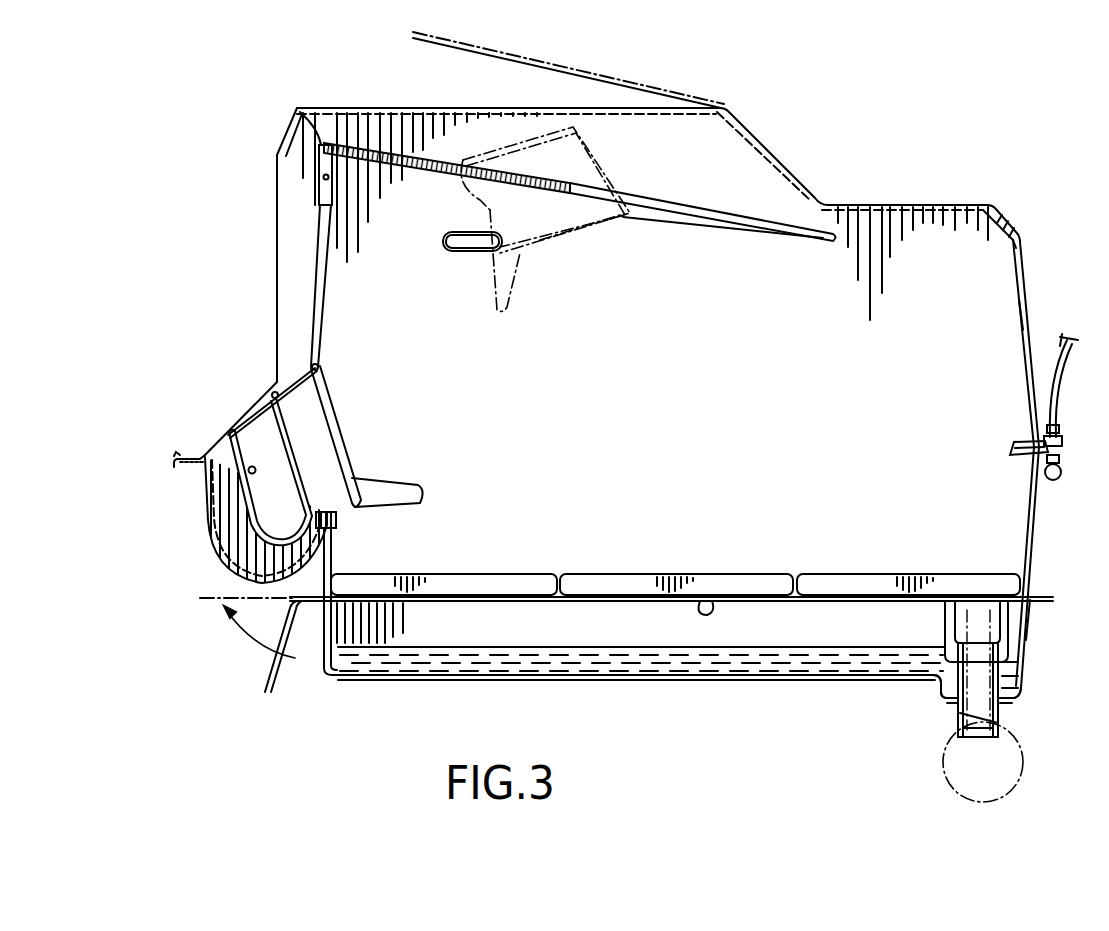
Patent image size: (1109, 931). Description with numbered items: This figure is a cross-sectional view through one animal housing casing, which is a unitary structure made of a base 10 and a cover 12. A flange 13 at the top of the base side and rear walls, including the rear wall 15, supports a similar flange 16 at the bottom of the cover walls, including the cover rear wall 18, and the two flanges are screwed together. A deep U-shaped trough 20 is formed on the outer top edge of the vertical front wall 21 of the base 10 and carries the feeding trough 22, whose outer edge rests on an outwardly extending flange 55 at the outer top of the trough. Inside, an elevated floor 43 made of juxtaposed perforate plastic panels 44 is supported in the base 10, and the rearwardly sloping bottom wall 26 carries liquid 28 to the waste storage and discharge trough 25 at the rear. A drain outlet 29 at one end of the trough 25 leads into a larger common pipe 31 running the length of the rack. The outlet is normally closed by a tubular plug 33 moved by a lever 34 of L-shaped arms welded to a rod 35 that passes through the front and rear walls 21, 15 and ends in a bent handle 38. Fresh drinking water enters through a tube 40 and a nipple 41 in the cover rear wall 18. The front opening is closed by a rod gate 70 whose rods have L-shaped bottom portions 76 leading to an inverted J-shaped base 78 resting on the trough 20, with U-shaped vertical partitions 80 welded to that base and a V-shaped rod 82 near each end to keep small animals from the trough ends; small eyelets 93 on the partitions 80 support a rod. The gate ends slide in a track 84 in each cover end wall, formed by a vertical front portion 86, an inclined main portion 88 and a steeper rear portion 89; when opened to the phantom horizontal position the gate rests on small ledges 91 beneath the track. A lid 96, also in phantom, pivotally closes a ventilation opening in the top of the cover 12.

The base 10 is at (1037, 557).
The cover 12 is at (1013, 243).
The flange 13 is at (1057, 476).
The rear wall 15 is at (1028, 627).
The flange 16 is at (1060, 458).
The rear wall 18 is at (1020, 324).
The trough 20 is at (208, 530).
The front wall 21 is at (324, 650).
The feeding trough 22 is at (205, 453).
The waste storage and discharge trough 25 is at (1023, 686).
The bottom wall 26 is at (700, 677).
The liquid 28 is at (776, 664).
The drain outlet 29 is at (1002, 722).
The pipe 31 is at (953, 787).
The plug 33 is at (938, 698).
The lever 34 is at (943, 627).
The rod 35 is at (710, 605).
The handle 38 is at (267, 686).
The tube 40 is at (1052, 366).
The nipple 41 is at (1013, 444).
The elevated floor 43 is at (597, 548).
The panels 44 is at (503, 577).
The flange 55 is at (176, 468).
The gate 70 is at (598, 253).
The bottom portions 76 is at (326, 390).
The base 78 is at (270, 394).
The partitions 80 is at (298, 453).
The V-shaped rod 82 is at (421, 485).
The track 84 is at (298, 107).
The front portion 86 is at (317, 167).
The main portion 88 is at (443, 150).
The rear portion 89 is at (795, 226).
The ledges 91 is at (452, 246).
The eyelets 93 is at (252, 467).
The lid 96 is at (612, 78).